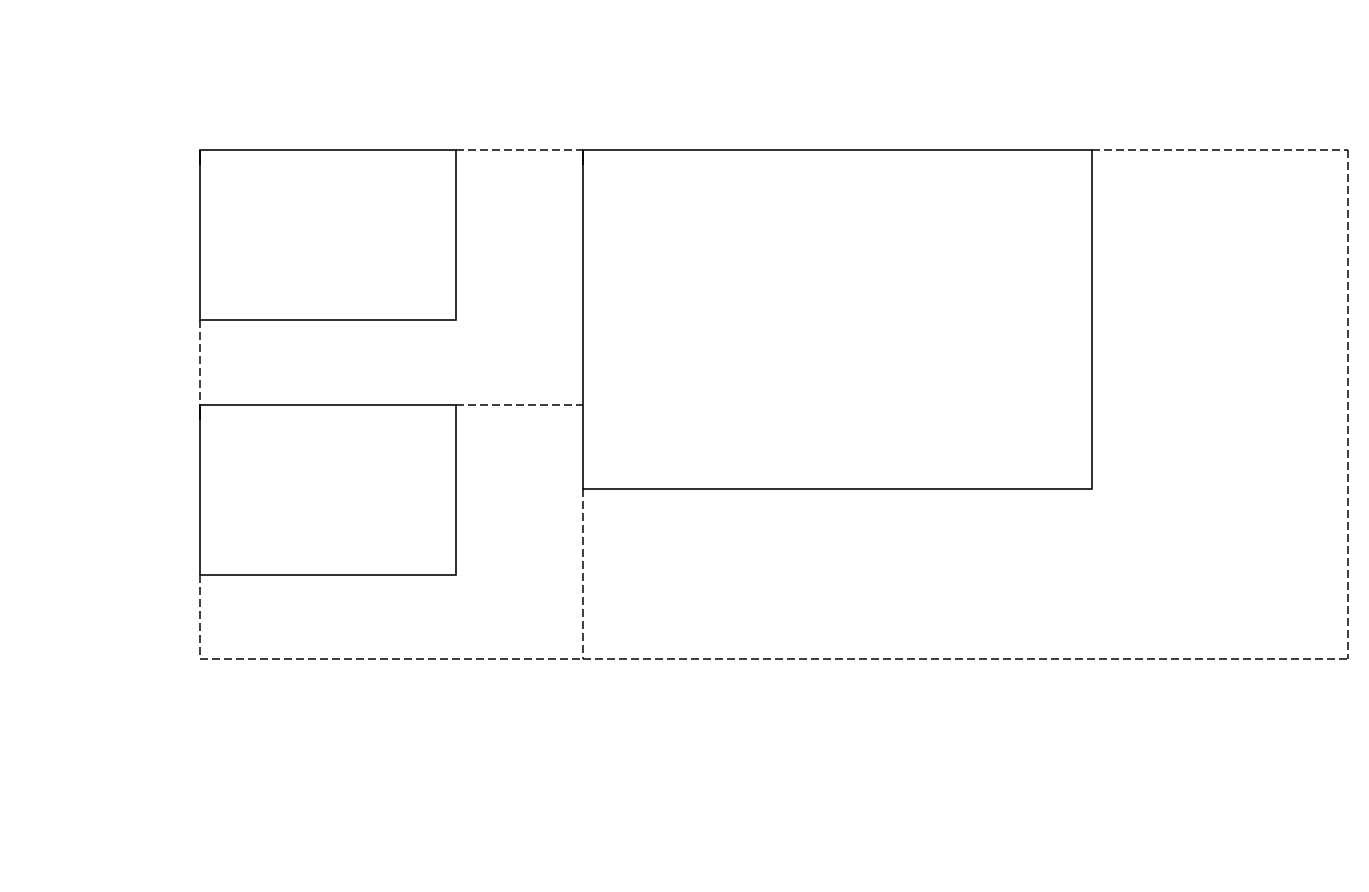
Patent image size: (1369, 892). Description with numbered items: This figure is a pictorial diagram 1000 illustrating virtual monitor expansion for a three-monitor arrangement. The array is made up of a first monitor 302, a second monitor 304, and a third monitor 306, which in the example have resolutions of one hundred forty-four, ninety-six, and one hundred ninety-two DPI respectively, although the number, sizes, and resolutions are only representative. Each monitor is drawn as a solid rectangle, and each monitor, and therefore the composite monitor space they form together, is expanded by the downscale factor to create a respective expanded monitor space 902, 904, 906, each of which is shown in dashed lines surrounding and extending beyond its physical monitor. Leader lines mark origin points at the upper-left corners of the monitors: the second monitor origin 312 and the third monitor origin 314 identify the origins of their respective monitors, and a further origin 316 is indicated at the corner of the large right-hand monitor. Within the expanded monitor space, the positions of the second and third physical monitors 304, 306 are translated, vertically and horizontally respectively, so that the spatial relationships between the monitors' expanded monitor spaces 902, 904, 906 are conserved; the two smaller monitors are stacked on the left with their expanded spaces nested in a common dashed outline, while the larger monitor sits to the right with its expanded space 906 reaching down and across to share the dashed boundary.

The display layout 1000 is at (281, 57).
The first monitor 302 is at (346, 246).
The second monitor 304 is at (346, 500).
The third monitor 306 is at (856, 330).
The second monitor origin 312 is at (200, 149).
The third monitor origin 314 is at (200, 404).
The third anchor point 316 is at (583, 149).
The expanded monitor space 902 is at (413, 376).
The expanded monitor space 904 is at (412, 626).
The expanded monitor space 906 is at (985, 624).